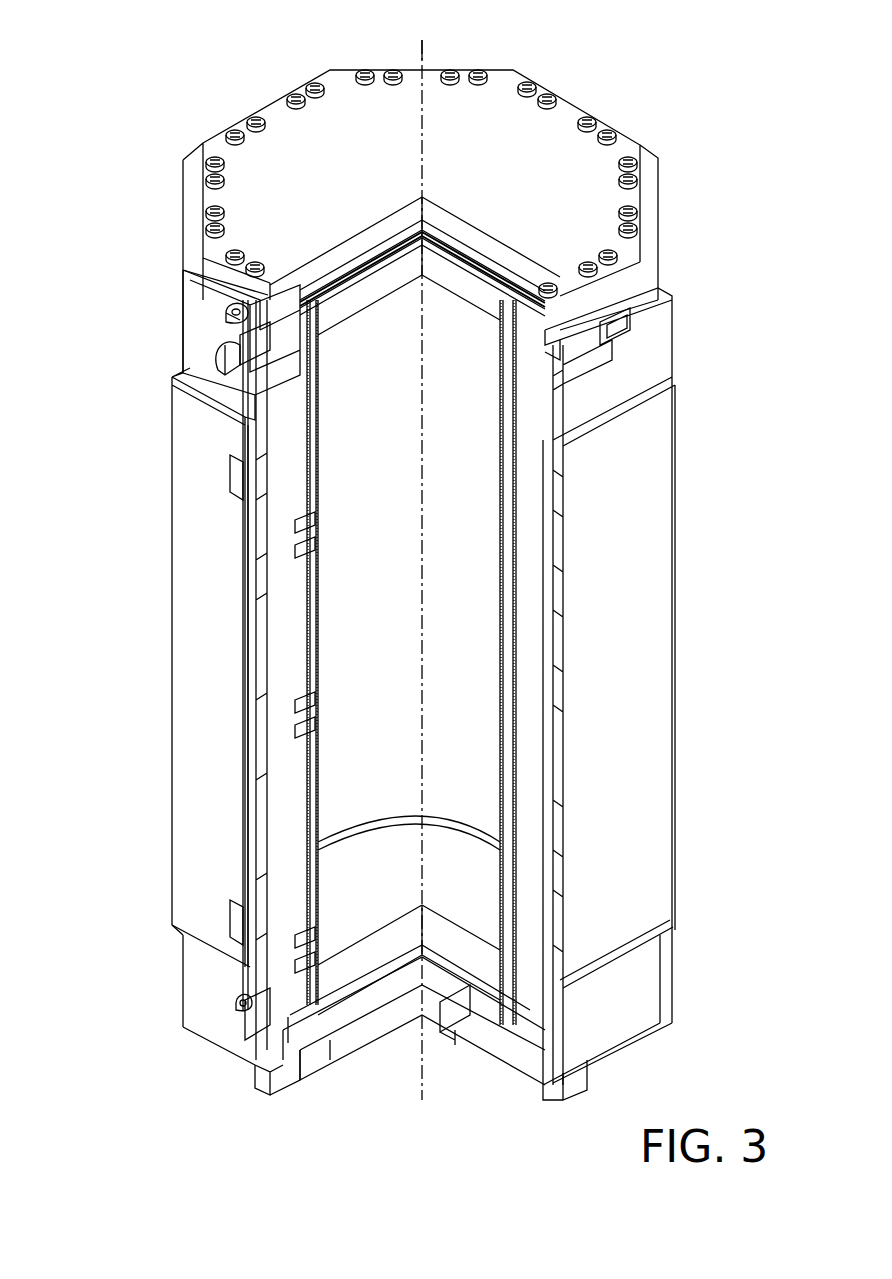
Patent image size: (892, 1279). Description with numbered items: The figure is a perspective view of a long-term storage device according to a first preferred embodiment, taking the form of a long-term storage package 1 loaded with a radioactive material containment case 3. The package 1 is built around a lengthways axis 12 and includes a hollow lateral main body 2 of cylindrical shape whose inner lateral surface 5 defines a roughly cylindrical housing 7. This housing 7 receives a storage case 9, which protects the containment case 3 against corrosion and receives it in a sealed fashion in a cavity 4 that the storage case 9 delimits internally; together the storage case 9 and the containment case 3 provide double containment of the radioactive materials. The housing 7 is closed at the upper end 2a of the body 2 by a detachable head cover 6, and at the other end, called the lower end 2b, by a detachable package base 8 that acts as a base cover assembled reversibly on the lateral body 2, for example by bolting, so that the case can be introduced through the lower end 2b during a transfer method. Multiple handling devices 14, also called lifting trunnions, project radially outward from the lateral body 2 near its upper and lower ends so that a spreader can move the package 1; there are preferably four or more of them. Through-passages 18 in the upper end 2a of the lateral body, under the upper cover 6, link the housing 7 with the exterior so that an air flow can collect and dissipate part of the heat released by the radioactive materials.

The package 1 is at (632, 88).
The hollow lateral main body 2 is at (205, 530).
The upper end 2a is at (205, 302).
The lower end 2b is at (645, 988).
The containment case 3 is at (318, 533).
The cavity 4 is at (300, 683).
The inner lateral surface 5 is at (310, 440).
The detachable head cover 6 is at (322, 170).
The housing 7 is at (505, 1000).
The detachable package base 8 is at (478, 1023).
The storage case 9 is at (312, 470).
The lengthways axis 12 is at (422, 52).
The handling devices 14 is at (238, 360).
The through-passages 18 is at (632, 322).